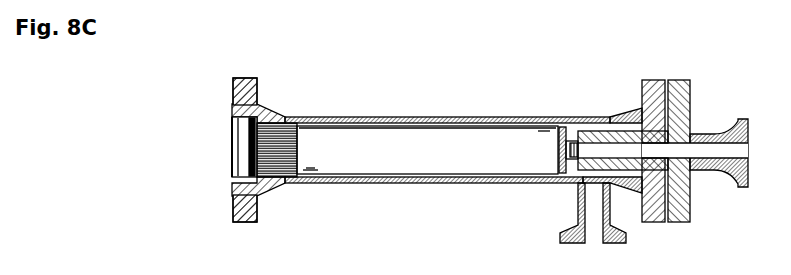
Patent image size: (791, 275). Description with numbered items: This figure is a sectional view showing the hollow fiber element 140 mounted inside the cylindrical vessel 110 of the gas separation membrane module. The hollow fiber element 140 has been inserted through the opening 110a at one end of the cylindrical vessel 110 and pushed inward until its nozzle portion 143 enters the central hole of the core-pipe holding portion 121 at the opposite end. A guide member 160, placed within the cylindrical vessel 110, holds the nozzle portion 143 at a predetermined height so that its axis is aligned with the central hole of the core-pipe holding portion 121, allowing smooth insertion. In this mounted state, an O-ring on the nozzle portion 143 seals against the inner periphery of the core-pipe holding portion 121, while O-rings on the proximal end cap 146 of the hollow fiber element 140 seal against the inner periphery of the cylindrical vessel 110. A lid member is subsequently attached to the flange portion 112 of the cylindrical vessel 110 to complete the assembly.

The cylindrical vessel 110 is at (698, 58).
The opening 110a is at (231, 135).
The flange portion 112 is at (247, 80).
The core-pipe holding portion 121 is at (590, 136).
The hollow fiber element 140 is at (378, 140).
The nozzle portion 143 is at (573, 147).
The proximal end cap 146 is at (243, 156).
The guide member 160 is at (567, 181).